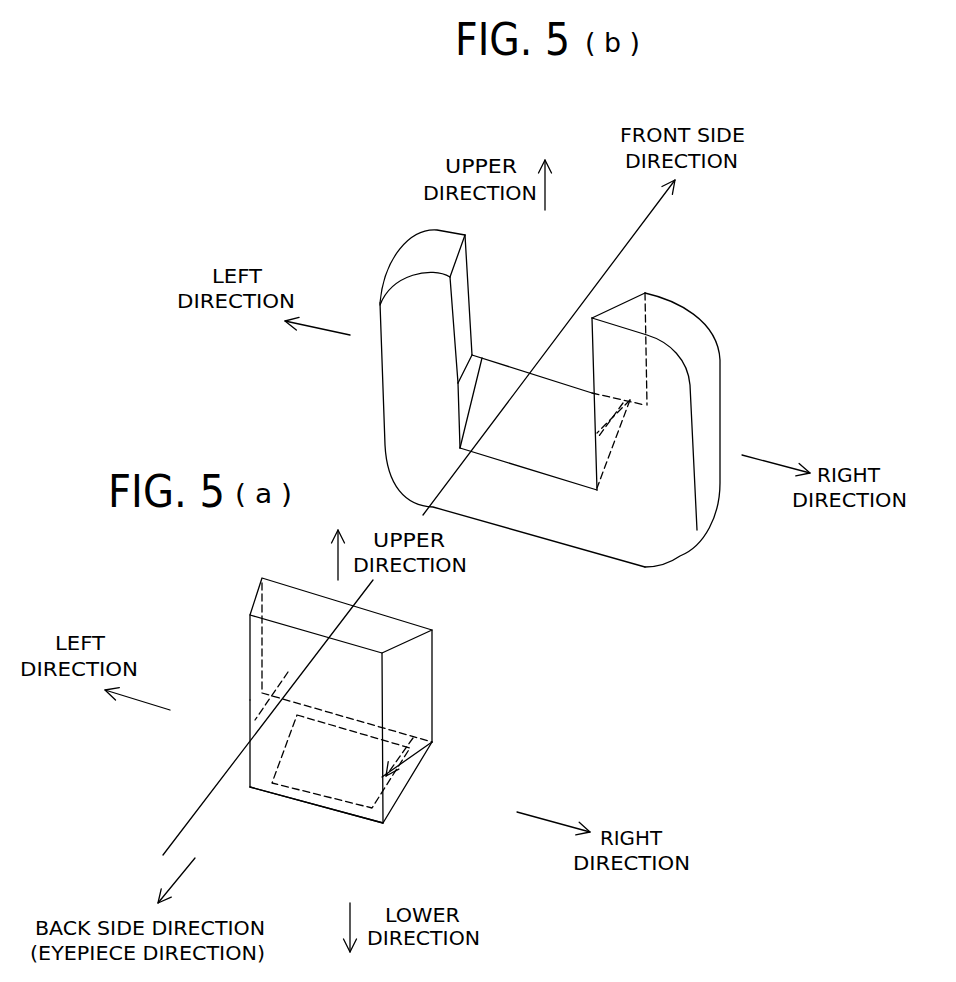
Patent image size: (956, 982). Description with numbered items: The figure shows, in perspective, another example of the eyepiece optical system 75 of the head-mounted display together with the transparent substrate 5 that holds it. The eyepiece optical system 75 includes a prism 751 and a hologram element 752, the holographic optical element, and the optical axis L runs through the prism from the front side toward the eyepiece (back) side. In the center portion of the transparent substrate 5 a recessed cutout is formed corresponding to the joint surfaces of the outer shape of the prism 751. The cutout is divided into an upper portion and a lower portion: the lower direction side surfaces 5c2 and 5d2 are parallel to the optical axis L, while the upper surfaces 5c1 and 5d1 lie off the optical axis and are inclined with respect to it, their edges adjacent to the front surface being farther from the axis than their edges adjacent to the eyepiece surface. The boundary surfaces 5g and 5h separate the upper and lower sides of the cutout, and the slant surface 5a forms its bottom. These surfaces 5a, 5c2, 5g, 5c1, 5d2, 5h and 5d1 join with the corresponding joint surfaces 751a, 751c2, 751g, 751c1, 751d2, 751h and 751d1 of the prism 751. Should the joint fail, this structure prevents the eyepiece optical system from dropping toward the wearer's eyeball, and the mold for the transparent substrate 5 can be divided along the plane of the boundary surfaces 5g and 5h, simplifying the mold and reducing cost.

The transparent substrate 5 is at (550, 398).
The slant surface 5a is at (467, 417).
The upper surface 5c1 is at (469, 268).
The lower direction side surface 5c2 is at (467, 393).
The boundary surface 5g is at (483, 360).
The upper surface 5d1 is at (618, 364).
The lower direction side surface 5d2 is at (603, 443).
The boundary surface 5h is at (643, 406).
The eyepiece optical system 75 is at (322, 719).
The prism 751 is at (332, 719).
The hologram element 752 is at (262, 767).
The joint surface 751a is at (330, 807).
The joint surface 751c1 is at (253, 630).
The joint surface 751c2 is at (252, 768).
The joint surface 751g is at (263, 700).
The joint surface 751d1 is at (420, 673).
The joint surface 751d2 is at (394, 794).
The joint surface 751h is at (419, 741).
The optical axis L is at (163, 852).